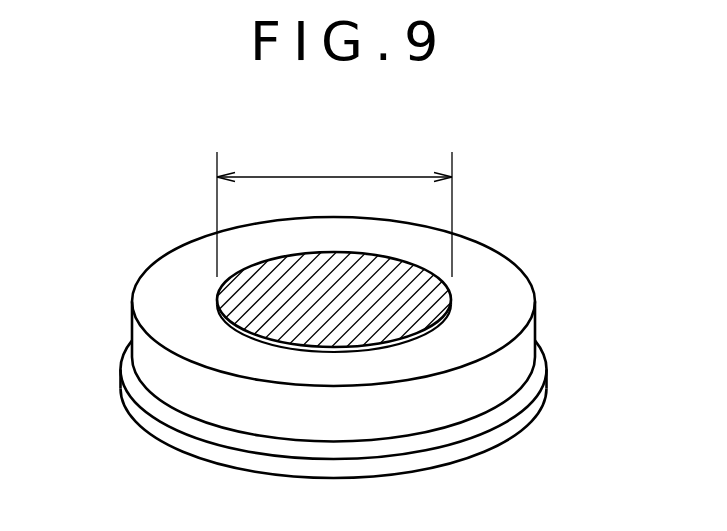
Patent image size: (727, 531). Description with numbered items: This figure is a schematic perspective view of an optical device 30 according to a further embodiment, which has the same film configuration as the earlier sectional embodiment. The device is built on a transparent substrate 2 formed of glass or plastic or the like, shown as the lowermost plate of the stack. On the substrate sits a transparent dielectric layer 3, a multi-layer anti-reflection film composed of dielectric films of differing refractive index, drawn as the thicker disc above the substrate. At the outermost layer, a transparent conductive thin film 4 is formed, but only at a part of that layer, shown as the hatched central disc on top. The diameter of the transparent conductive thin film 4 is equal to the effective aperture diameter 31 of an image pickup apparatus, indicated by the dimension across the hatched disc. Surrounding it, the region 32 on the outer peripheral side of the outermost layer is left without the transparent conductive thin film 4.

The optical device 30 is at (123, 213).
The transparent substrate 2 is at (537, 422).
The transparent dielectric layer 3 is at (540, 335).
The region 32 is at (520, 293).
The transparent conductive thin film 4 is at (443, 298).
The effective aperture diameter 31 is at (334, 212).